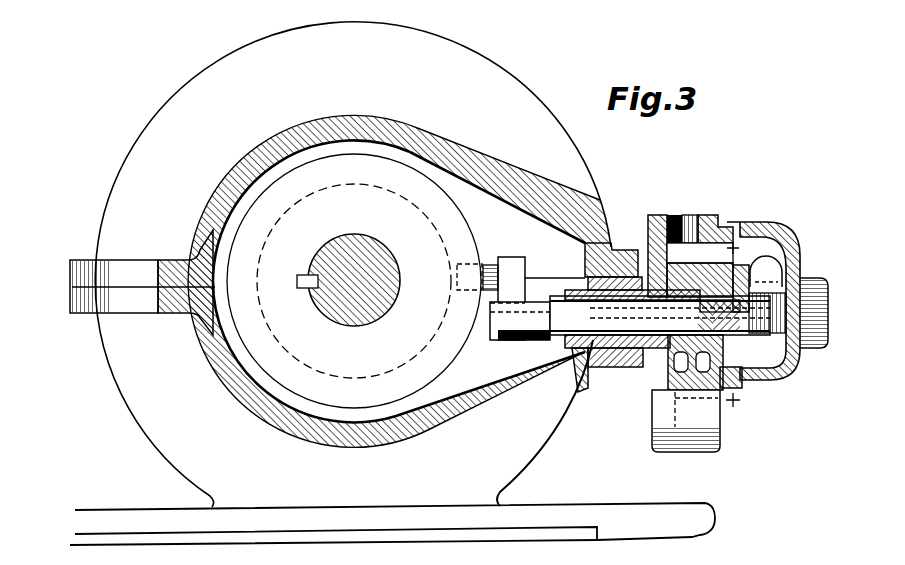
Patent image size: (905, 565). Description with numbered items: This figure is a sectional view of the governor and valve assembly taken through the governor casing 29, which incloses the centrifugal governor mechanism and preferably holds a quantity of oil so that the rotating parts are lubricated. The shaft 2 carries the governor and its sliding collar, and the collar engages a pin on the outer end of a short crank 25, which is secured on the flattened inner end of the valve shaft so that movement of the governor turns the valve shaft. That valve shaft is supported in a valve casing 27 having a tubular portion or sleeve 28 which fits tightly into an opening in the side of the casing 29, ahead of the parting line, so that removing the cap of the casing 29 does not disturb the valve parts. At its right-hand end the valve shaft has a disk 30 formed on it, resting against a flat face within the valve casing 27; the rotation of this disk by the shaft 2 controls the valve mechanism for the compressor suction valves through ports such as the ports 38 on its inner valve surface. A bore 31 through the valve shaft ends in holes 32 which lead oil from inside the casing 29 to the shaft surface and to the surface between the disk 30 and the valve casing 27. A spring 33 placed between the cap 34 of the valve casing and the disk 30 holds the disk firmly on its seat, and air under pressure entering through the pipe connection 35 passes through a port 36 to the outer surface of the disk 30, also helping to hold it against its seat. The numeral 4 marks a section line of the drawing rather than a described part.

The shaft 2 is at (59, 267).
The section line 4 is at (738, 243).
The crank 25 is at (517, 272).
The valve casing 27 is at (650, 225).
The tubular portion (sleeve) 28 is at (622, 362).
The casing 29 is at (500, 172).
The disk 30 is at (747, 268).
The bore 31 is at (652, 350).
The holes 32 is at (743, 378).
The spring 33 is at (787, 370).
The cap 34 is at (707, 252).
The pipe connection 35 is at (655, 222).
The port 36 is at (688, 222).
The ports 38 is at (792, 268).